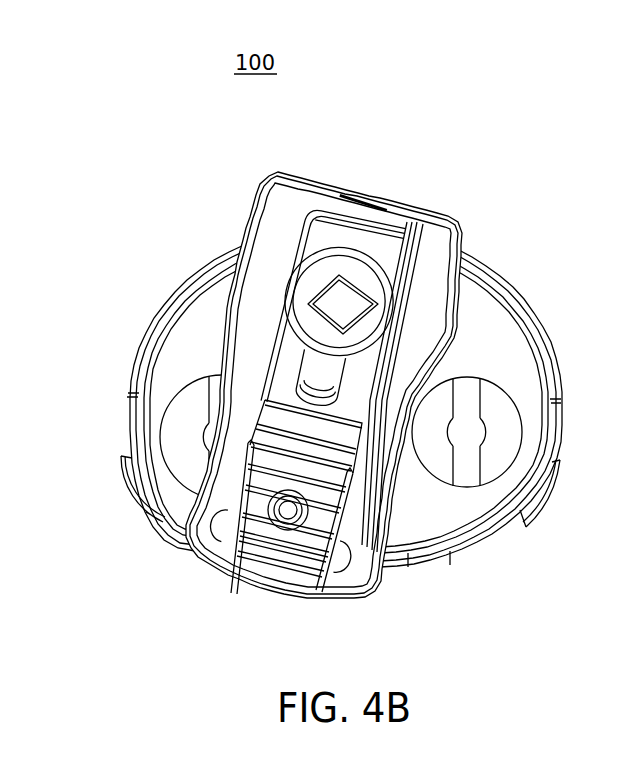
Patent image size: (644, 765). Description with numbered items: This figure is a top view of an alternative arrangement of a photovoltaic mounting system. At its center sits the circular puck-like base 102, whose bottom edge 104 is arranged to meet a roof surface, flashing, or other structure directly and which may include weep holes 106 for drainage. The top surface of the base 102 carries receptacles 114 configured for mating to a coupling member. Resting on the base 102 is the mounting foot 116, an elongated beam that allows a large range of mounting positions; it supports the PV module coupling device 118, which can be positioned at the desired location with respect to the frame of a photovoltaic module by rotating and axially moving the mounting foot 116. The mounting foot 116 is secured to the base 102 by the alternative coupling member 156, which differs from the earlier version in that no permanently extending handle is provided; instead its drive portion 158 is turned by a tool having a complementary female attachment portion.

The base 102 is at (181, 261).
The bottom edge 104 is at (519, 303).
The weep holes 106 is at (430, 560).
The receptacles 114 is at (493, 463).
The mounting foot 116 is at (240, 200).
The PV module coupling device 118 is at (222, 480).
The alternative coupling member 156 is at (342, 248).
The drive portion 158 is at (361, 292).